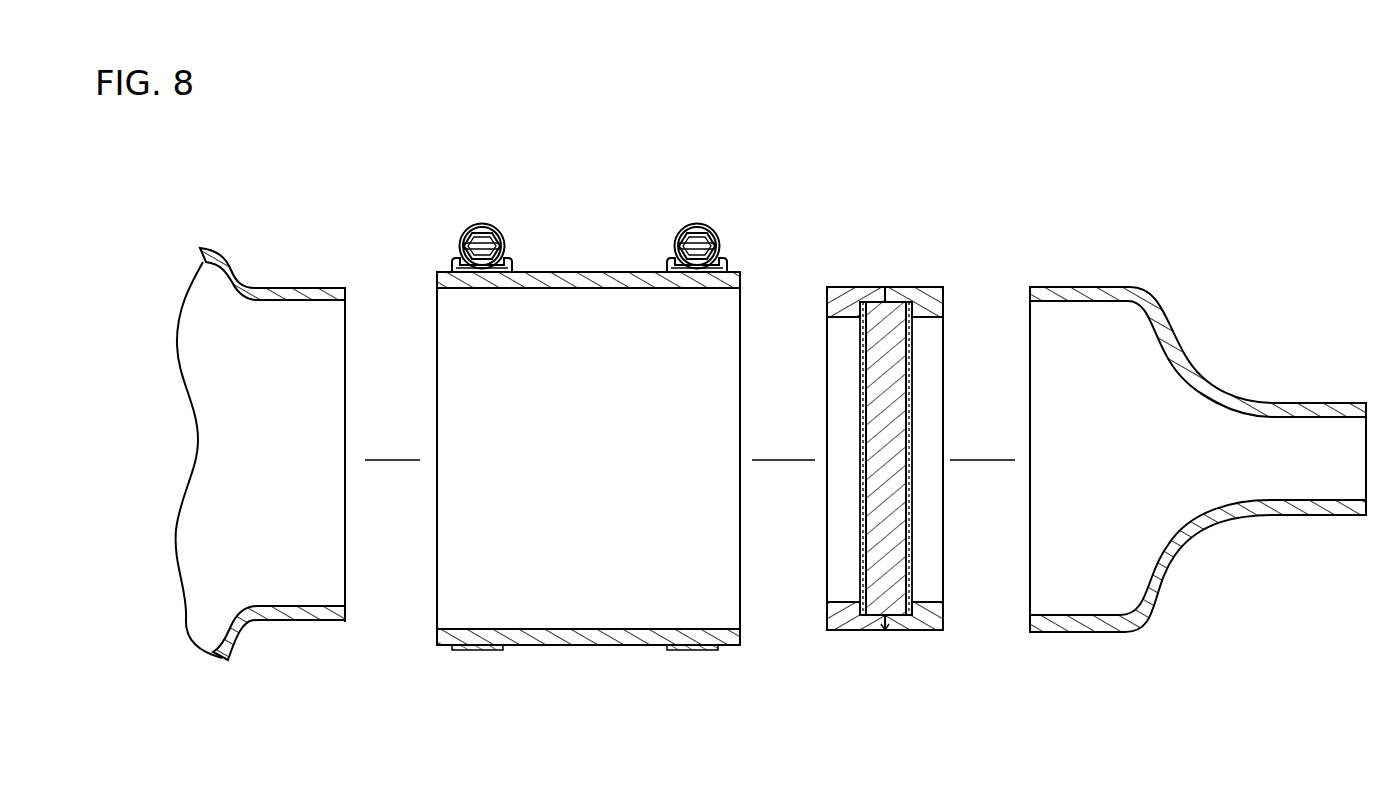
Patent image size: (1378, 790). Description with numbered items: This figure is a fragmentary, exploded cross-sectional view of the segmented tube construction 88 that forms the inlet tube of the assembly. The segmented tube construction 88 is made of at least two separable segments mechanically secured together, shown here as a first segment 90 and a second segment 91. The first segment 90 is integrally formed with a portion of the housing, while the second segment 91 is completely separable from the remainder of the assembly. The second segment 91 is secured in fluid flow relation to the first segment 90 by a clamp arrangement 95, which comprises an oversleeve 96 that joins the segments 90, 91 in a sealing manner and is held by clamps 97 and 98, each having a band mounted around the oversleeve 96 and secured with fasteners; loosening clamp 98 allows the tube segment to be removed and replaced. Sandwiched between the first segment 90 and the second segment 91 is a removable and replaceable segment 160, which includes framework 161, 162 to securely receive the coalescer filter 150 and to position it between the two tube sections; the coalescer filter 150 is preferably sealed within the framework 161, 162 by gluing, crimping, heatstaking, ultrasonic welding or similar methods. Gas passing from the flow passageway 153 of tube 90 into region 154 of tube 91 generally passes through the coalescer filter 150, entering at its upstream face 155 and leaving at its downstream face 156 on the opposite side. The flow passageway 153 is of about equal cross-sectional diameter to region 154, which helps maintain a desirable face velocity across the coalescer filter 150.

The segmented tube construction 88 is at (713, 142).
The first segment 90 is at (298, 295).
The second segment 91 is at (1105, 290).
The clamp arrangement 95 is at (551, 215).
The oversleeve 96 is at (597, 275).
The clamp 97 is at (462, 232).
The clamp 98 is at (713, 235).
The coalescer filter 150 is at (887, 363).
The flow passageway 153 is at (1140, 362).
The region 154 is at (298, 598).
The upstream face 155 is at (910, 412).
The downstream face 156 is at (860, 410).
The removable and replaceable segment 160 is at (872, 255).
The framework 161 is at (928, 620).
The framework 162 is at (840, 620).